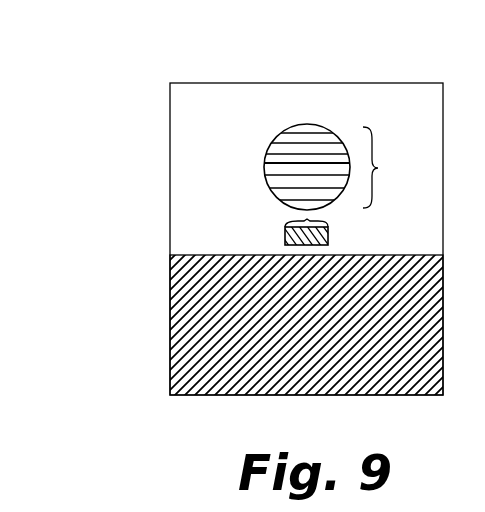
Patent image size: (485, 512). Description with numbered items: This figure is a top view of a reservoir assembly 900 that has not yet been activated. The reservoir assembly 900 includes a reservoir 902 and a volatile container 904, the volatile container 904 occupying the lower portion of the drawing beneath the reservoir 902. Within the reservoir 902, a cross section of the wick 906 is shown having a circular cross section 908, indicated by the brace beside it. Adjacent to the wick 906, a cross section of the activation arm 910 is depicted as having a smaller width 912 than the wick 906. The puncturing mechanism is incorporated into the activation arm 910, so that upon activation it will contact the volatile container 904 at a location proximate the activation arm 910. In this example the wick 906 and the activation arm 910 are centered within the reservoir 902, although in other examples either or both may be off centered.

The reservoir assembly 900 is at (79, 66).
The reservoir 902 is at (217, 104).
The volatile container 904 is at (200, 343).
The wick 906 is at (313, 162).
The circular cross section 908 is at (390, 167).
The activation arm 910 is at (287, 238).
The smaller width 912 is at (328, 221).